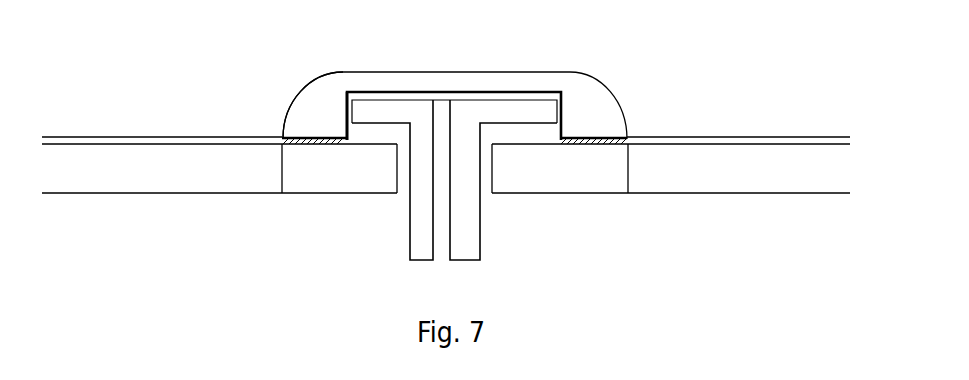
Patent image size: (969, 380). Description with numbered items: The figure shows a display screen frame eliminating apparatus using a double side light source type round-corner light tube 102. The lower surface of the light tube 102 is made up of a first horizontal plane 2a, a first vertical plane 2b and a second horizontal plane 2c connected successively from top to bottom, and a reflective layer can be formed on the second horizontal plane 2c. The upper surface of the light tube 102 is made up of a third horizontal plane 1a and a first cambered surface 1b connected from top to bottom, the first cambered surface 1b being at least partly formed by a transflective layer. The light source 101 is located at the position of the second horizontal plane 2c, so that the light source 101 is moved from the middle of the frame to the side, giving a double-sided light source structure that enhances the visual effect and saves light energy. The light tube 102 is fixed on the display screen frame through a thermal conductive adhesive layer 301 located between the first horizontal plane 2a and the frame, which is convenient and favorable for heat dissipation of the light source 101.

The third horizontal plane 1a is at (510, 71).
The first cambered surface 1b is at (287, 102).
The first horizontal plane 2a is at (382, 93).
The first vertical plane 2b is at (347, 110).
The second horizontal plane 2c is at (305, 139).
The light source 101 is at (320, 145).
The light tube 102 is at (540, 84).
The thermal conductive adhesive layer 301 is at (508, 98).